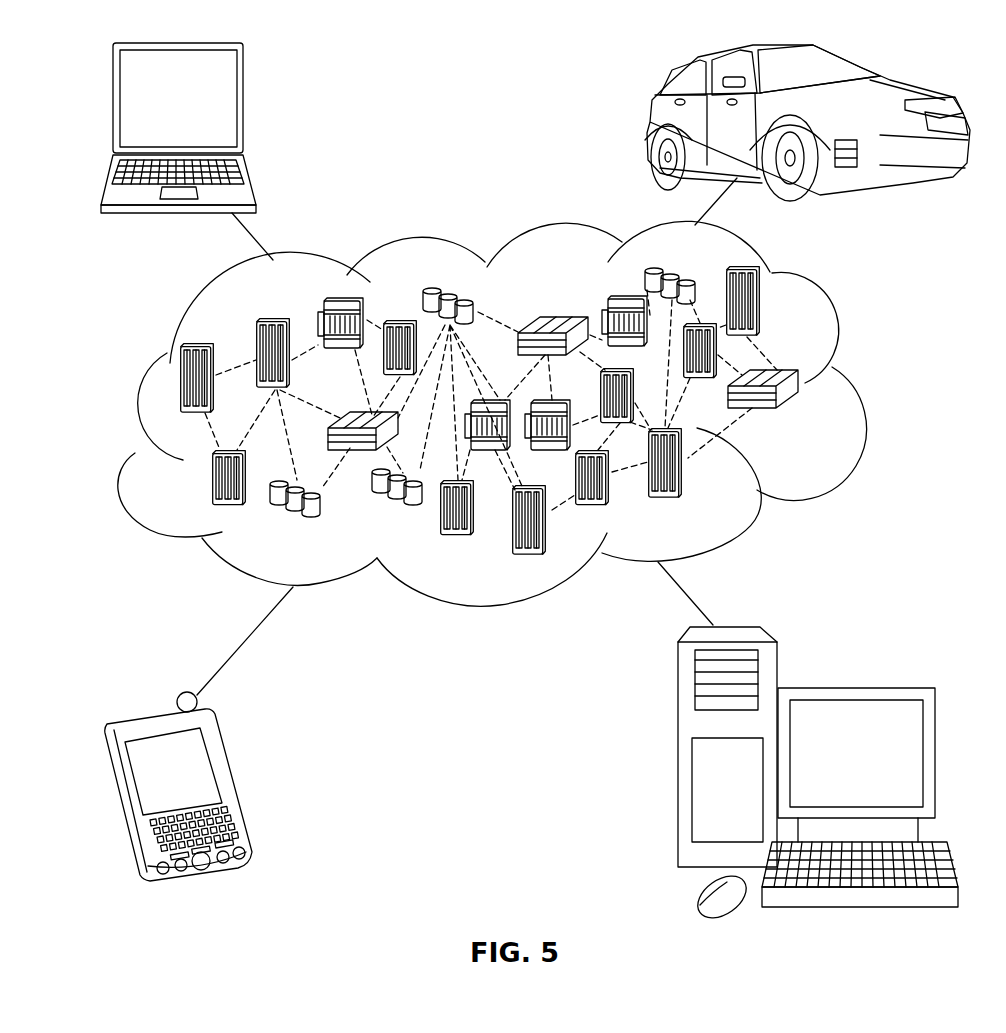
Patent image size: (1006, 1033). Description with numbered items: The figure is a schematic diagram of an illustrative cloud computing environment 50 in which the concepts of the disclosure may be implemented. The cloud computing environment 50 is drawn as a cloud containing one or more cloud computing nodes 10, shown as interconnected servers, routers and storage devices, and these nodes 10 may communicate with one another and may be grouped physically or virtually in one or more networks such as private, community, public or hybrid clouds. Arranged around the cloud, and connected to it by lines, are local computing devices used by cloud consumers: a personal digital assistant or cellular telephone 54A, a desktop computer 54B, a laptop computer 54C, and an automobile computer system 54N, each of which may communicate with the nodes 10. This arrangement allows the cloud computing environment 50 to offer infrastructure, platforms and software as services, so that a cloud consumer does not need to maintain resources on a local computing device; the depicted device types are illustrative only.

The cloud computing nodes 10 is at (812, 427).
The cloud computing environment 50 is at (857, 389).
The personal digital assistant (PDA) or cellular telephone 54A is at (233, 787).
The desktop computer 54B is at (853, 688).
The laptop computer 54C is at (243, 108).
The automobile computer system 54N is at (652, 120).